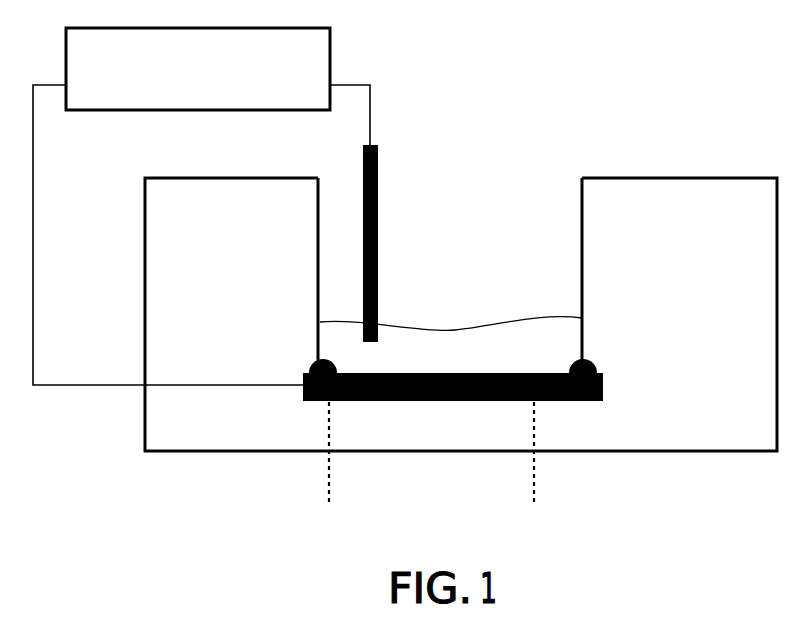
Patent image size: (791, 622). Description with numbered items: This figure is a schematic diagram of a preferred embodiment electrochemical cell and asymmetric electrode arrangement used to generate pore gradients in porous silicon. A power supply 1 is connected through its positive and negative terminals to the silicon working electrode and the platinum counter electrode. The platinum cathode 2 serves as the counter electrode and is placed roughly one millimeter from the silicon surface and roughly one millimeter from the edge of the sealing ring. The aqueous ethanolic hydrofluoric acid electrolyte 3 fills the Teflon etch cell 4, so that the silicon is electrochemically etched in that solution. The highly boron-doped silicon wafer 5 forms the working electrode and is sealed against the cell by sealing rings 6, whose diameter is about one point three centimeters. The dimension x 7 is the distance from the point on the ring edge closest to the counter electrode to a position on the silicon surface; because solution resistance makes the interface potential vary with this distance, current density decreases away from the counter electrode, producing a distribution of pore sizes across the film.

The power supply 1 is at (198, 206).
The Pt cathode 2 is at (387, 152).
The HF(aq):ethanol electrolyte 3 is at (461, 328).
The Teflon etch cell 4 is at (461, 314).
The p++ Si wafer 5 is at (301, 373).
The O-ring 6 is at (592, 366).
The etched region width x 7 is at (527, 482).